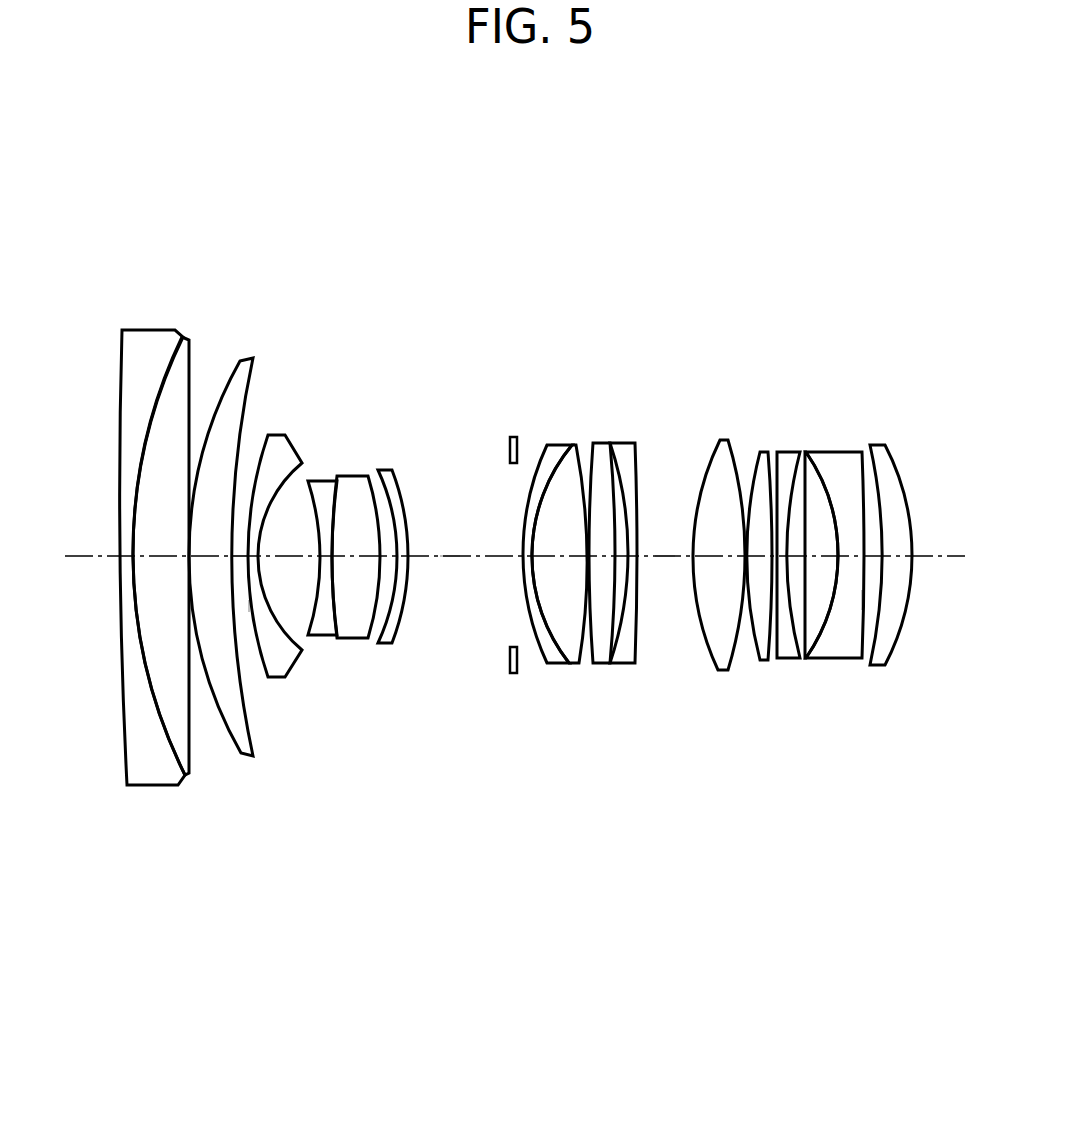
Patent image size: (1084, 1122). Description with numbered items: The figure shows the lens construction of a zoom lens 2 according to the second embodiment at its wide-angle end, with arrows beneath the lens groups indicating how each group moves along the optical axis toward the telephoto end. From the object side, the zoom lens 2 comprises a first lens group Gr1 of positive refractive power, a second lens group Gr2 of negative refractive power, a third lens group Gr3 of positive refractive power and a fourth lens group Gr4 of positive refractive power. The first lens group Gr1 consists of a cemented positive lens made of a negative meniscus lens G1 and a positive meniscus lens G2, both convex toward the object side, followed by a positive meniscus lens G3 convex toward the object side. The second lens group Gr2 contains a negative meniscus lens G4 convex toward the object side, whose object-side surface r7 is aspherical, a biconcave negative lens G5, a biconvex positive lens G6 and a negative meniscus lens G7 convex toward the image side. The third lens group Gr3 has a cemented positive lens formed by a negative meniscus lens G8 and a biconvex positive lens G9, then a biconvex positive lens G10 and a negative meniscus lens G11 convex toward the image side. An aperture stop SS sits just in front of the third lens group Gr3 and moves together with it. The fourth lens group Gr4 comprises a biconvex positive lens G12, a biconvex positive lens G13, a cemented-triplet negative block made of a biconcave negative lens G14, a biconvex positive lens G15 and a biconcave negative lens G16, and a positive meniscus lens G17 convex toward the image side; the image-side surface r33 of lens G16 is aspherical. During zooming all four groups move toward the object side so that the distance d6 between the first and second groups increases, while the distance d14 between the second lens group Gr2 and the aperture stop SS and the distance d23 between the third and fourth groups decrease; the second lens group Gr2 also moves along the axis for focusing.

The zoom lens 2 is at (483, 237).
The first lens group Gr1 is at (87, 970).
The second lens group Gr2 is at (242, 797).
The third lens group Gr3 is at (523, 970).
The fourth lens group Gr4 is at (728, 970).
The negative meniscus lens G1 is at (143, 345).
The positive meniscus lens G2 is at (188, 340).
The positive meniscus lens G3 is at (248, 362).
The negative meniscus lens G4 is at (275, 437).
The biconcave negative lens G5 is at (325, 480).
The biconvex positive lens G6 is at (360, 476).
The negative meniscus lens G7 is at (388, 470).
The negative meniscus lens G8 is at (557, 445).
The biconvex positive lens G9 is at (577, 445).
The biconvex positive lens G10 is at (610, 443).
The negative meniscus lens G11 is at (632, 443).
The biconvex positive lens G12 is at (722, 440).
The biconvex positive lens G13 is at (767, 452).
The biconcave negative lens G14 is at (793, 452).
The biconvex positive lens G15 is at (812, 452).
The biconcave negative lens G16 is at (843, 452).
The positive meniscus lens G17 is at (890, 445).
The aperture stop SS is at (508, 440).
The distance between first and second lens groups d6 is at (240, 565).
The object-side surface of negative meniscus lens G4 r7 is at (249, 610).
The distance between second lens group and aperture stop d14 is at (447, 563).
The distance between third and fourth lens groups d23 is at (665, 562).
The image-side surface of cemented-triplet negative lens r33 is at (866, 600).